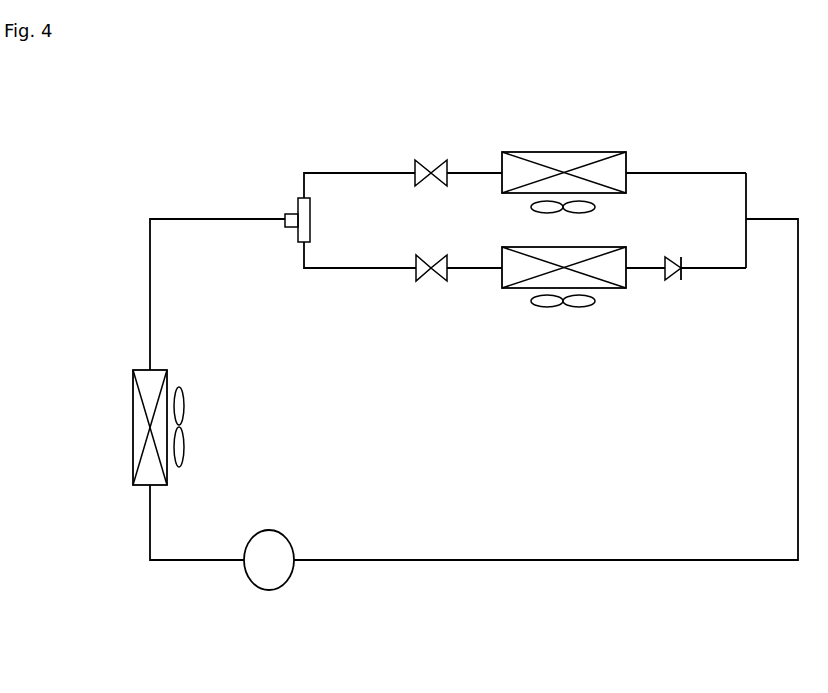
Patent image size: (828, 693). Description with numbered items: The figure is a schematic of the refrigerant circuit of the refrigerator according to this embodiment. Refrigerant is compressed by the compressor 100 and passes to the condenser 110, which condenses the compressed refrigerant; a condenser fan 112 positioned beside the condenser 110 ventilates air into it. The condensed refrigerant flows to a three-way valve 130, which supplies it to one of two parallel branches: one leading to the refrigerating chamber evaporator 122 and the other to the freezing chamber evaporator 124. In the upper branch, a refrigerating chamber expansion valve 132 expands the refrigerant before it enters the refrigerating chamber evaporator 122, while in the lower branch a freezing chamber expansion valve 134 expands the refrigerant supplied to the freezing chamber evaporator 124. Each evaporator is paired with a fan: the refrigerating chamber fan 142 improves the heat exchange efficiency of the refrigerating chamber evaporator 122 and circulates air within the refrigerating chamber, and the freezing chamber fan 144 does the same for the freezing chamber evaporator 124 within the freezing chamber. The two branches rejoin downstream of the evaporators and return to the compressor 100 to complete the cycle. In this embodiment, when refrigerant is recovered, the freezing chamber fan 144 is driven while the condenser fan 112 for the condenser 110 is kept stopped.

The compressor 100 is at (283, 588).
The condenser 110 is at (130, 412).
The condenser fan 112 is at (184, 422).
The refrigerating chamber evaporator 122 is at (562, 152).
The freezing chamber evaporator 124 is at (514, 289).
The 3-way valve 130 is at (292, 211).
The refrigerating chamber expansion valve 132 is at (421, 160).
The freezing chamber expansion valve 134 is at (424, 282).
The refrigerating chamber fan 142 is at (594, 209).
The freezing chamber fan 144 is at (582, 307).